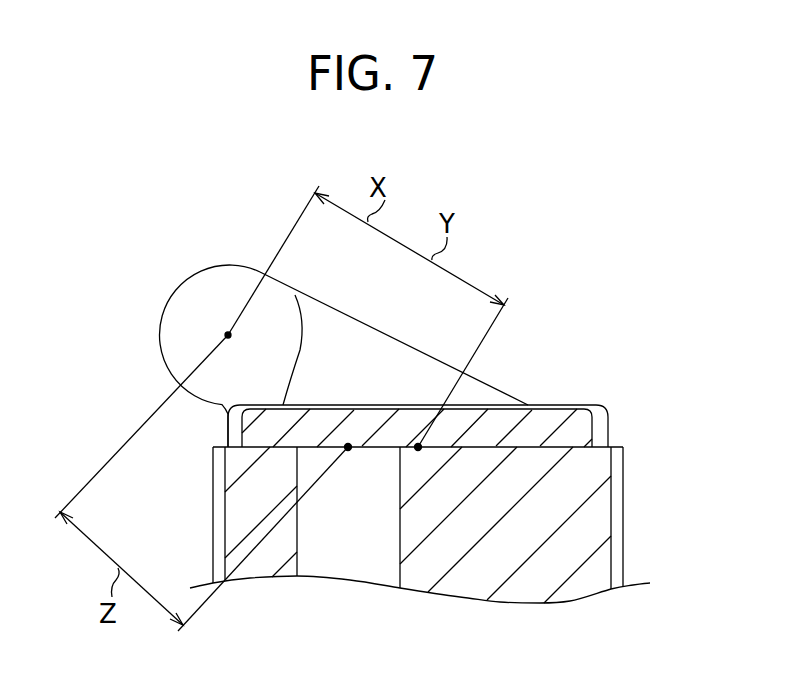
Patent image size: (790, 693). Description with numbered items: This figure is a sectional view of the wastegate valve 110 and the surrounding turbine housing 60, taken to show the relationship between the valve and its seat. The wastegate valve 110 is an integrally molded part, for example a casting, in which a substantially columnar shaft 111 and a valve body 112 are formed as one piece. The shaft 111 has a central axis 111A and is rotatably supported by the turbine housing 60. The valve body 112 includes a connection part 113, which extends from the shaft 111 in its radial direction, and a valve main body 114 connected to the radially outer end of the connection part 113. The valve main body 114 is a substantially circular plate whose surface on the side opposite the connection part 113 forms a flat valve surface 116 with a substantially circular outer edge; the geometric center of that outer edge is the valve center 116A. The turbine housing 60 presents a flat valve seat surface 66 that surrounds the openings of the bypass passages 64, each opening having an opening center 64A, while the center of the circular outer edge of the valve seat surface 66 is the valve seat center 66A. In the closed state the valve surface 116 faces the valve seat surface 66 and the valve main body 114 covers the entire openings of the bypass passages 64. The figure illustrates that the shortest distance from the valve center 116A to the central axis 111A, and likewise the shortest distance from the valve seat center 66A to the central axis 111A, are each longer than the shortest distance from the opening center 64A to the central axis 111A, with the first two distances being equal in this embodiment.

The turbine housing 60 is at (624, 565).
The bypass passage 64 is at (298, 564).
The opening center 64A is at (349, 450).
The valve seat surface 66 is at (578, 447).
The valve seat center 66A is at (420, 450).
The wastegate valve 110 is at (172, 356).
The shaft 111 is at (169, 298).
The central axis 111A is at (227, 331).
The valve body 112 is at (608, 422).
The connection part 113 is at (375, 330).
The valve main body 114 is at (573, 405).
The valve surface 116 is at (547, 447).
The valve center 116A is at (416, 450).